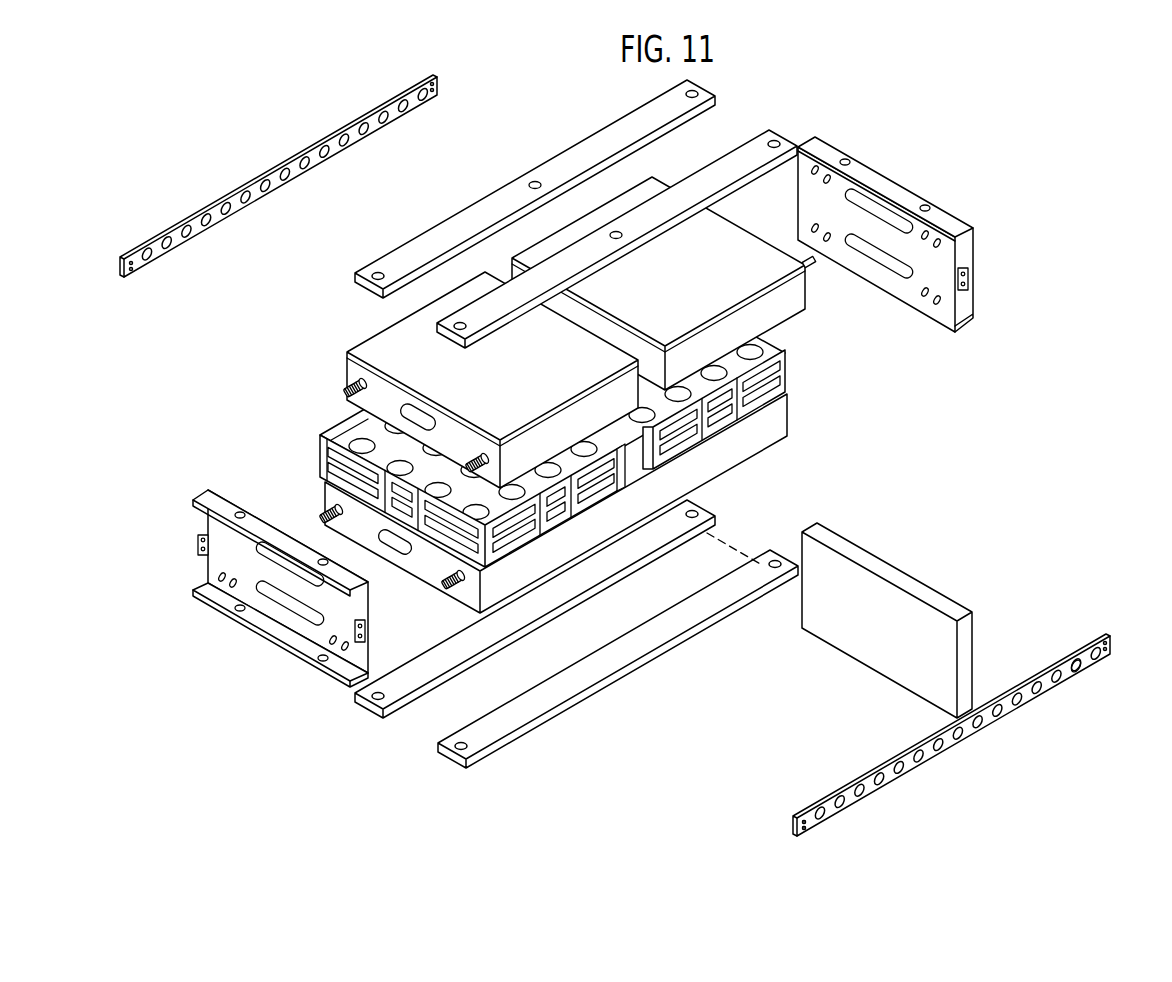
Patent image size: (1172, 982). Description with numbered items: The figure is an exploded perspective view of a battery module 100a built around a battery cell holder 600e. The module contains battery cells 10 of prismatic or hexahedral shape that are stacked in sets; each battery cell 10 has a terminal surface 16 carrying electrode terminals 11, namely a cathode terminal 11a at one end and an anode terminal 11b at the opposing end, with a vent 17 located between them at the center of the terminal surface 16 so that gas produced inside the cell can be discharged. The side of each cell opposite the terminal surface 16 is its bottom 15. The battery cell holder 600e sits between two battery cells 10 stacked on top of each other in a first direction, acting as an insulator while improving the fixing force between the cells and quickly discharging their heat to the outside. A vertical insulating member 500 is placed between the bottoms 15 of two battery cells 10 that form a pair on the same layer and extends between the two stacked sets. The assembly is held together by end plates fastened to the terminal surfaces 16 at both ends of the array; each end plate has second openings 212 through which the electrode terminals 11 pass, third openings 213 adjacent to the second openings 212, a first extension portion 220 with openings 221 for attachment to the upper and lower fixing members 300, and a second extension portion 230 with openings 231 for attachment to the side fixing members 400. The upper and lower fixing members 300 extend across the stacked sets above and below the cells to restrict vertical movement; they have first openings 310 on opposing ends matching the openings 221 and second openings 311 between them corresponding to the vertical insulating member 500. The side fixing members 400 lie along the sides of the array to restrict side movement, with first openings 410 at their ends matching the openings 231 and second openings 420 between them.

The battery cell 10 is at (544, 332).
The electrode terminals 11 is at (545, 437).
The cathode terminal 11a is at (325, 513).
The anode terminal 11b is at (465, 590).
The bottom 15 is at (709, 413).
The terminal surface 16 is at (353, 367).
The vent 17 is at (343, 418).
The battery module 100a is at (1128, 100).
The second openings 212 is at (937, 302).
The third openings 213 is at (925, 292).
The first extension portion 220 is at (958, 224).
The openings 221 is at (925, 206).
The second extension portion 230 is at (965, 292).
The openings 231 is at (964, 284).
The upper and lower fixing members 300 is at (576, 404).
The first openings 310 is at (576, 194).
The second openings 311 is at (615, 231).
The side fixing members 400 is at (982, 705).
The first openings 410 is at (1106, 650).
The second openings 420 is at (1082, 668).
The vertical insulating member 500 is at (906, 567).
The battery cell holder 600e is at (550, 414).